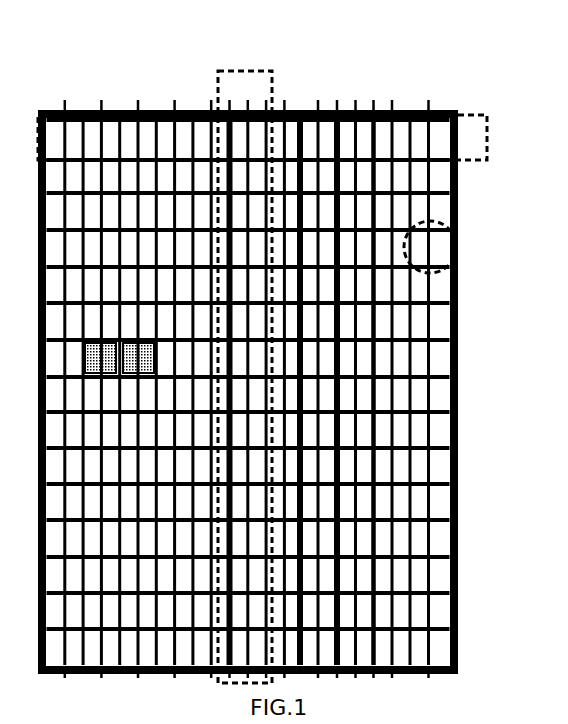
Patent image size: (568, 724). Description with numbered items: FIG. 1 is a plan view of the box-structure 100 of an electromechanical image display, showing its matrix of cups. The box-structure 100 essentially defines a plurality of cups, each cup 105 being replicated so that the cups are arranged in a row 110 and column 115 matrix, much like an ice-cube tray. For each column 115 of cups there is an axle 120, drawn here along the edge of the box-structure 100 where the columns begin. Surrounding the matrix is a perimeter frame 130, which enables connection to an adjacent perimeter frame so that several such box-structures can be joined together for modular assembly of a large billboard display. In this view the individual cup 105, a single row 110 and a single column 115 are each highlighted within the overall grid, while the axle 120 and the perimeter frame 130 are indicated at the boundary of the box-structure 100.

The box-structure 100 is at (136, 64).
The cup 105 is at (460, 254).
The row 110 is at (487, 160).
The column 115 is at (264, 72).
The axle 120 is at (428, 114).
The perimeter frame 130 is at (452, 365).